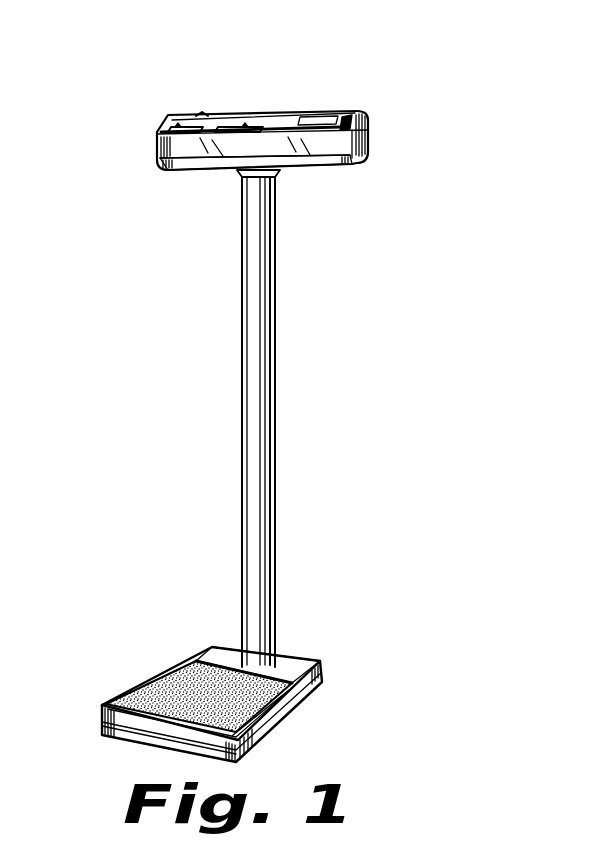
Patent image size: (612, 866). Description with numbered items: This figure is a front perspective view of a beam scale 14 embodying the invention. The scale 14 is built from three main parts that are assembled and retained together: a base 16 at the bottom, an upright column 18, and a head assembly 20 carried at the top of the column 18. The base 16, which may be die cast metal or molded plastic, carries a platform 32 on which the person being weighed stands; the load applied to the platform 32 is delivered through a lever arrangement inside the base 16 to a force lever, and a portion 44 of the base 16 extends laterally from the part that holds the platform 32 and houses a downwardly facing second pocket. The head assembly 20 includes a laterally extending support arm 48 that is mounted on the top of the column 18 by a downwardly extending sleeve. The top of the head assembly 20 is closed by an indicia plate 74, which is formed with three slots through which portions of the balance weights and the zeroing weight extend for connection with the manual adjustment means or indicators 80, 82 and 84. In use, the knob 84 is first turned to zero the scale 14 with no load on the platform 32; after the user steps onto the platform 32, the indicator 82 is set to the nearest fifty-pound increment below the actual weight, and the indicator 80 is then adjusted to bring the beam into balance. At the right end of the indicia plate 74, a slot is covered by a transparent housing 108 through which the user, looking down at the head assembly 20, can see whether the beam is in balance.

The beam scale 14 is at (290, 391).
The base 16 is at (292, 708).
The column 18 is at (276, 447).
The head assembly 20 is at (370, 130).
The platform 32 is at (153, 677).
The portion of the base 44 is at (203, 653).
The support arm 48 is at (313, 173).
The indicia plate 74 is at (336, 118).
The indicator 80 is at (202, 114).
The indicator 82 is at (245, 124).
The adjustment knob 84 is at (176, 126).
The transparent housing 108 is at (347, 119).